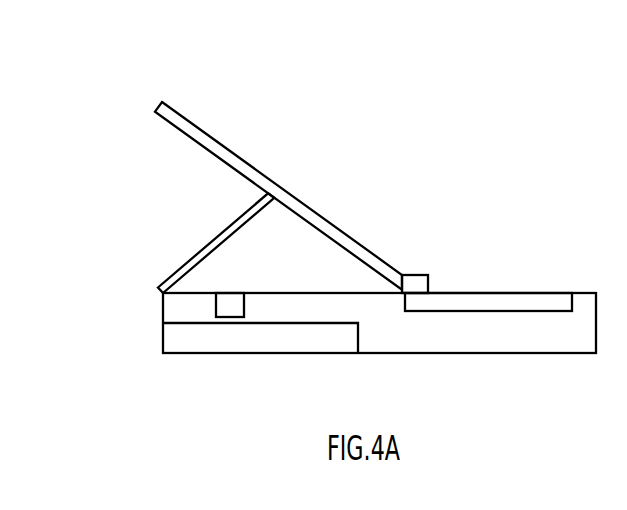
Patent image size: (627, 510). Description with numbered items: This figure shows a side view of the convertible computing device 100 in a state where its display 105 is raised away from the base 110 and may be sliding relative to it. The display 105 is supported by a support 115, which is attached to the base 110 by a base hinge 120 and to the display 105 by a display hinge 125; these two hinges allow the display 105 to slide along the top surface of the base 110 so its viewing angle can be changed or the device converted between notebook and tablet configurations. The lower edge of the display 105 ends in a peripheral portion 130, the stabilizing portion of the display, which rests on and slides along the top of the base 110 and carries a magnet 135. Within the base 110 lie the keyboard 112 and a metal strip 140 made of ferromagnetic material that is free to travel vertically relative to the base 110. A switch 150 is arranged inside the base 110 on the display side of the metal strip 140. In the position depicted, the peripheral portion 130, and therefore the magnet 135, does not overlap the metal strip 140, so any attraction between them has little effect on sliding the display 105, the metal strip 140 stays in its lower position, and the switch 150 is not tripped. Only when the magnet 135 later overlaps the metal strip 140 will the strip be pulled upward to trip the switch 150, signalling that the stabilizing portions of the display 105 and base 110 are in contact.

The computing device 100 is at (443, 159).
The display 105 is at (217, 141).
The base 110 is at (377, 308).
The keyboard 112 is at (488, 296).
The support 115 is at (195, 256).
The base hinge 120 is at (162, 294).
The display hinge 125 is at (263, 192).
The peripheral portion 130 is at (403, 275).
The magnet 135 is at (415, 285).
The metal strip 140 is at (260, 353).
The switch 150 is at (230, 305).